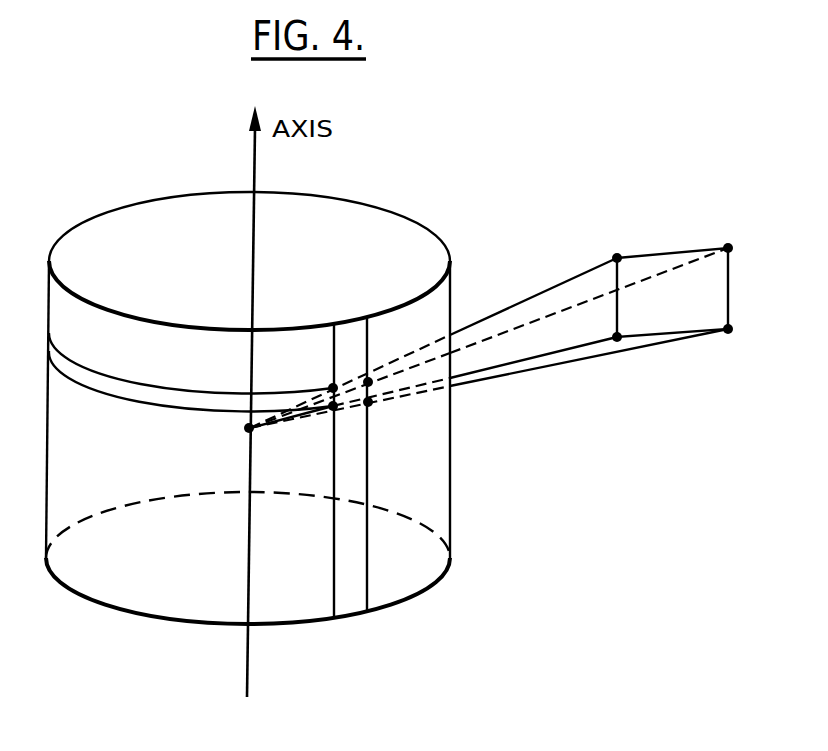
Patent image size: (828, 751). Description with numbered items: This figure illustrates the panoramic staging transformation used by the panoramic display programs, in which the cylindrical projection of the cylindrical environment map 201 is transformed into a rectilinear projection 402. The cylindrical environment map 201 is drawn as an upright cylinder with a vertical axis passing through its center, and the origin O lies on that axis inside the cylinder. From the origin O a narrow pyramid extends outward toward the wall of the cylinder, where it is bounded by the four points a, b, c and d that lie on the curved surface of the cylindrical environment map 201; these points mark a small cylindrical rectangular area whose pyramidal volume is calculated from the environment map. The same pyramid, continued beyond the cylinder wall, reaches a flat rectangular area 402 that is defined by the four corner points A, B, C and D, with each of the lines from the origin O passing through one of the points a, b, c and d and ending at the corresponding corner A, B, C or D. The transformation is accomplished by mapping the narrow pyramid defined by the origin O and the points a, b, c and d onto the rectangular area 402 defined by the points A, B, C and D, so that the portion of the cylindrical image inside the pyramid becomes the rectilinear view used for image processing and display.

The cylindrical environment map 201 is at (462, 503).
The rectangular area 402 is at (675, 267).
The point A is at (612, 244).
The point B is at (608, 329).
The point C is at (738, 330).
The point D is at (740, 239).
The origin O is at (232, 432).
The point a is at (323, 377).
The point b is at (327, 421).
The point c is at (373, 413).
The point d is at (374, 366).